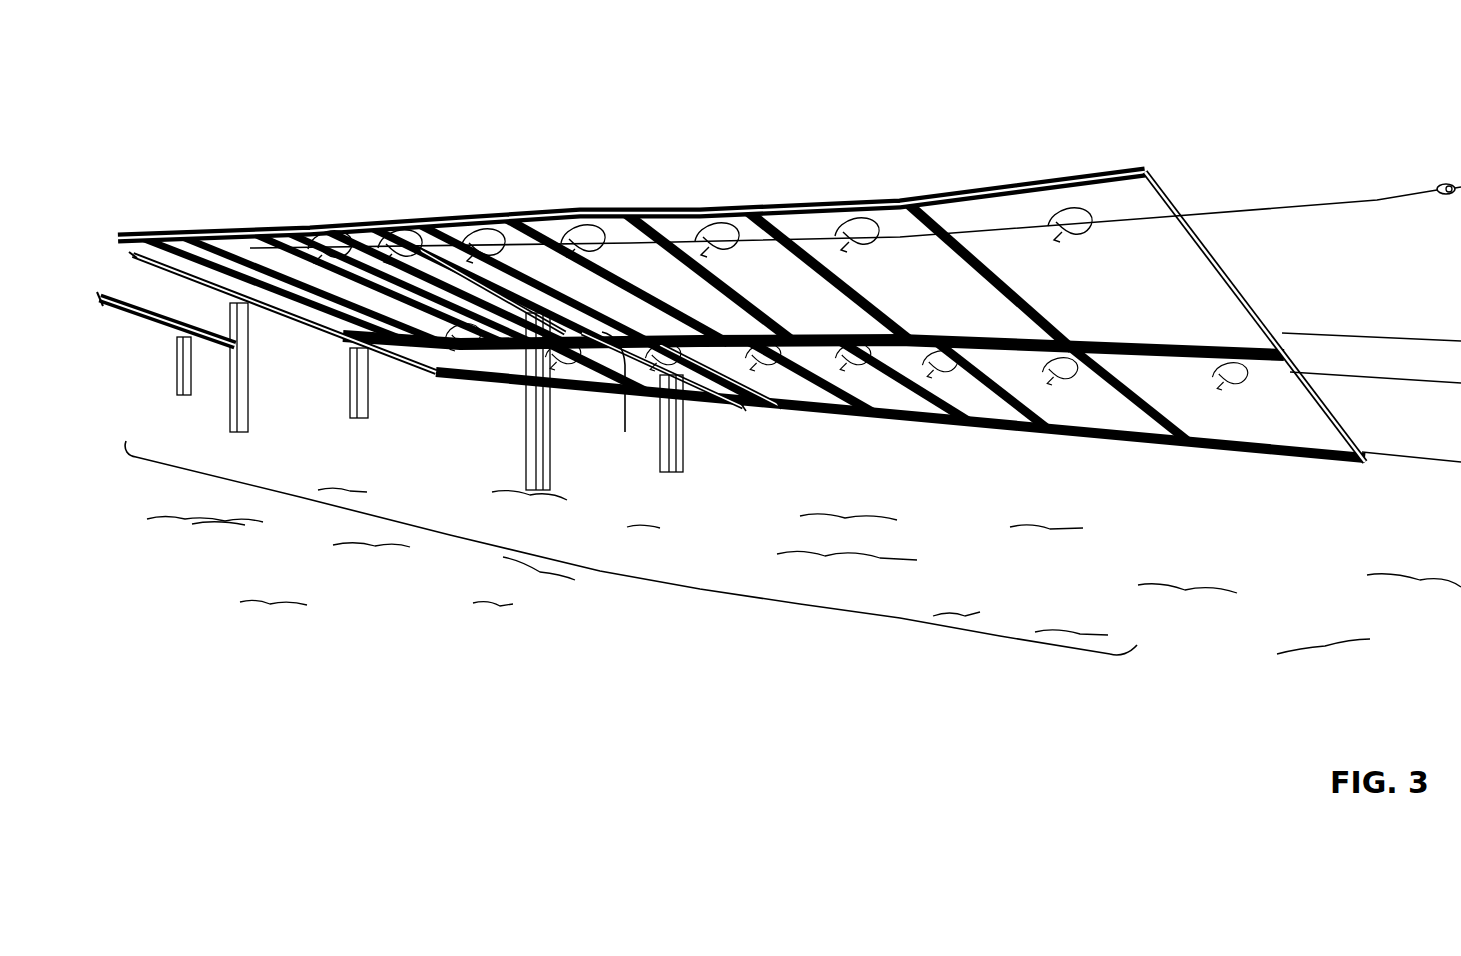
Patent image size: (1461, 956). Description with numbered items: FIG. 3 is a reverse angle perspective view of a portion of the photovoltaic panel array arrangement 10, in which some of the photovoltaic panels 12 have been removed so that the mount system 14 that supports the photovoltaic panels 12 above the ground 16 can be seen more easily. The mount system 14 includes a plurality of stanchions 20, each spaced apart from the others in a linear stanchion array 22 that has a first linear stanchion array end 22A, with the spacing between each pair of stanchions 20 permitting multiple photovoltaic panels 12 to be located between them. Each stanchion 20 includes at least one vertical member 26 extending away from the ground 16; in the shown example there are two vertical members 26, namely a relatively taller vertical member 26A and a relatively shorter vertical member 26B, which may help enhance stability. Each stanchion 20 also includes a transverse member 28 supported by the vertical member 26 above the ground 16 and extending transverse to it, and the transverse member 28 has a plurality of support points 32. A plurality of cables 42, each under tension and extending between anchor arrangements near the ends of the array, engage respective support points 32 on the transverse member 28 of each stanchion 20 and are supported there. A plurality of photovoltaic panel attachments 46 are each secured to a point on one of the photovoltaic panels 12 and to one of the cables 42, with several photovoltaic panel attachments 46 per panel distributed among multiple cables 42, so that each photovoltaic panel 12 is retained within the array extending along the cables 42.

The photovoltaic panel array arrangement 10 is at (316, 172).
The photovoltaic panels 12 is at (356, 215).
The mount system 14 is at (1397, 130).
The ground 16 is at (465, 590).
The stanchions 20 is at (166, 355).
The linear stanchion array 22 is at (616, 572).
The first linear stanchion array end 22A is at (1190, 667).
The vertical member 26 is at (526, 444).
The relatively taller vertical member 26A is at (538, 401).
The relatively shorter vertical member 26B is at (671, 423).
The transverse member 28 is at (622, 400).
The support points 32 is at (490, 224).
The cables 42 is at (1196, 215).
The photovoltaic panel attachments 46 is at (940, 207).